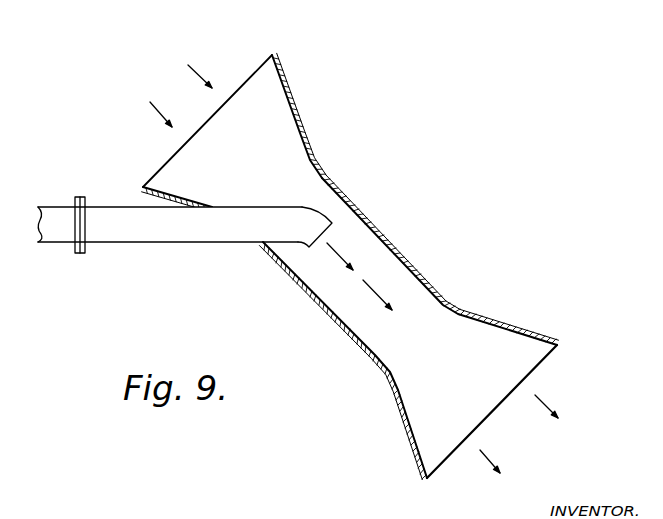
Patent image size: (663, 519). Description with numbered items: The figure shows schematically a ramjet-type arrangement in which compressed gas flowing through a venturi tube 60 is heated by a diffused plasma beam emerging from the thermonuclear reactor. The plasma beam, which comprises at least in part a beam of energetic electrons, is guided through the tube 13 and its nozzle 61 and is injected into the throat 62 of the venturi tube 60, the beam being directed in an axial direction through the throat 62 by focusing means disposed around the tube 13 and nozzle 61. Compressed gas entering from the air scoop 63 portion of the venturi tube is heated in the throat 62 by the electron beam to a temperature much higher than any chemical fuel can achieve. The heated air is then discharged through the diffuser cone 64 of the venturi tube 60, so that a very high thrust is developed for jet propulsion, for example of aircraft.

The tube 13 is at (182, 228).
The venturi tube 60 is at (350, 266).
The nozzle 61 is at (307, 205).
The throat 62 is at (391, 240).
The air scoop 63 is at (296, 115).
The diffuser cone 64 is at (410, 433).